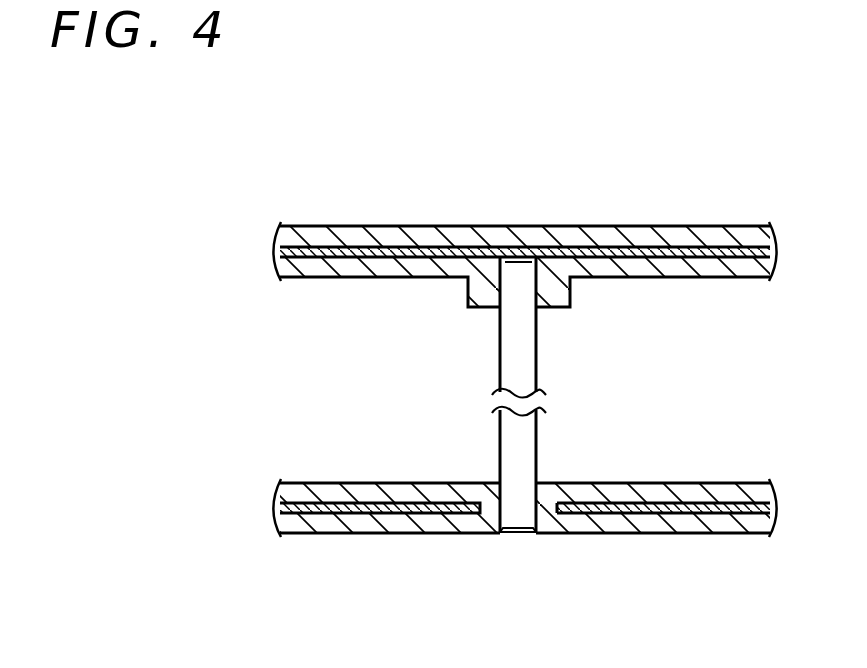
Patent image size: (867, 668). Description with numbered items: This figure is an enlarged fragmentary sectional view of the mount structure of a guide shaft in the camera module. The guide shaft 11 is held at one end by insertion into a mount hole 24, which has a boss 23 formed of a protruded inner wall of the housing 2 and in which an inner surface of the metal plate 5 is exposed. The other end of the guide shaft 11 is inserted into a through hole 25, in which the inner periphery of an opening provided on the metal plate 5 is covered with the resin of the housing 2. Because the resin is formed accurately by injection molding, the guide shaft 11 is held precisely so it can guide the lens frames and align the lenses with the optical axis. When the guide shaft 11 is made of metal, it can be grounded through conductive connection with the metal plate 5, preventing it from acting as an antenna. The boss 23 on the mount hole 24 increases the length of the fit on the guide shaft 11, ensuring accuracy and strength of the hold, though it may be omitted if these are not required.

The housing 2 is at (344, 227).
The metal plate 5 is at (596, 226).
The guide shaft 11 is at (499, 447).
The boss 23 is at (470, 300).
The mount hole 24 is at (538, 305).
The through hole 25 is at (535, 534).